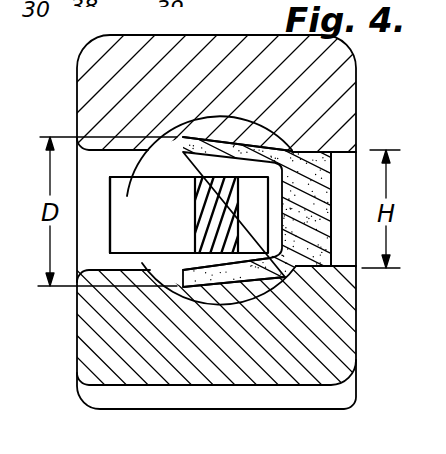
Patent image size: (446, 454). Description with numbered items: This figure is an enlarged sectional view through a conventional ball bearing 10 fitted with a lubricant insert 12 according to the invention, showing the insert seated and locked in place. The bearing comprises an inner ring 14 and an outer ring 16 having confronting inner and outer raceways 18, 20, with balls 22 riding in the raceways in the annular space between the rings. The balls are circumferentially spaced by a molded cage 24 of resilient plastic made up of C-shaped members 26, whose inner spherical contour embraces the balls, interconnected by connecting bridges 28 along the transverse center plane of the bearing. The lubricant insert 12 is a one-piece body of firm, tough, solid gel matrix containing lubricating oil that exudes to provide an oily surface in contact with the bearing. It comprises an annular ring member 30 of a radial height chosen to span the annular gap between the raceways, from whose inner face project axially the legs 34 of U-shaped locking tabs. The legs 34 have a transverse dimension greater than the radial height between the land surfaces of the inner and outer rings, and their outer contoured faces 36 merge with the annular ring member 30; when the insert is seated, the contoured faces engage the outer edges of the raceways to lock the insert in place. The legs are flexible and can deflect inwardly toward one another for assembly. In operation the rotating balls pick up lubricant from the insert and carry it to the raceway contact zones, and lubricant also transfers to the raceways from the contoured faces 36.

The ball bearing 10 is at (357, 79).
The lubricant insert 12 is at (330, 182).
The inner ring 14 is at (87, 335).
The outer ring 16 is at (93, 43).
The inner raceway 18 is at (210, 298).
The outer raceway 20 is at (157, 151).
The balls 22 is at (190, 293).
The cage 24 is at (122, 194).
The C-shaped members 26 is at (141, 210).
The connecting bridges 28 is at (197, 212).
The annular ring member 30 is at (308, 146).
The legs 34 is at (237, 130).
The contoured faces 36 is at (318, 113).